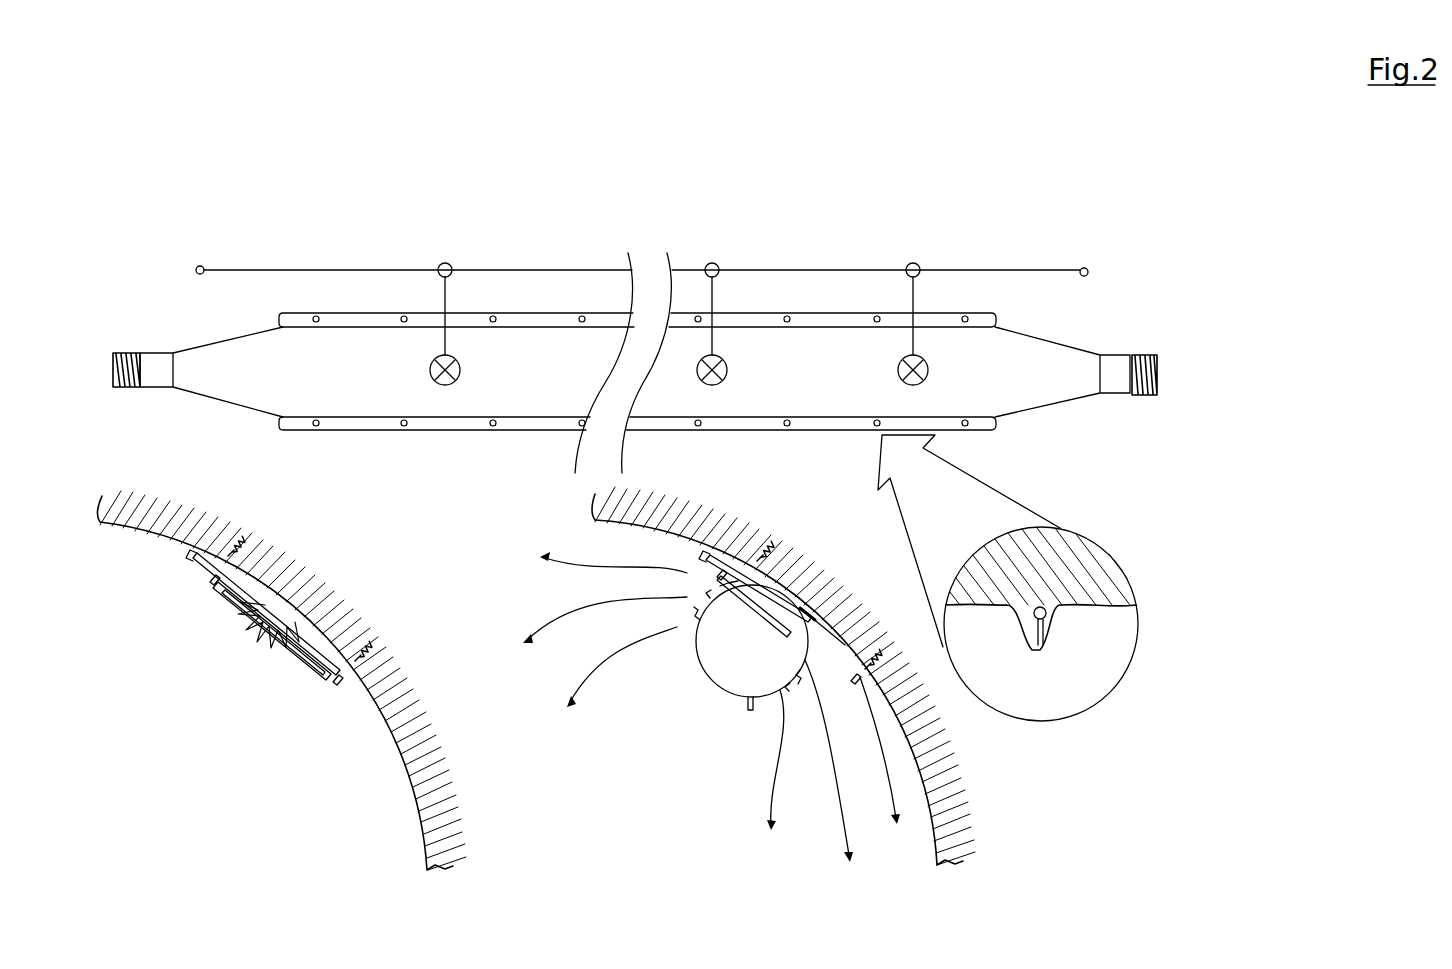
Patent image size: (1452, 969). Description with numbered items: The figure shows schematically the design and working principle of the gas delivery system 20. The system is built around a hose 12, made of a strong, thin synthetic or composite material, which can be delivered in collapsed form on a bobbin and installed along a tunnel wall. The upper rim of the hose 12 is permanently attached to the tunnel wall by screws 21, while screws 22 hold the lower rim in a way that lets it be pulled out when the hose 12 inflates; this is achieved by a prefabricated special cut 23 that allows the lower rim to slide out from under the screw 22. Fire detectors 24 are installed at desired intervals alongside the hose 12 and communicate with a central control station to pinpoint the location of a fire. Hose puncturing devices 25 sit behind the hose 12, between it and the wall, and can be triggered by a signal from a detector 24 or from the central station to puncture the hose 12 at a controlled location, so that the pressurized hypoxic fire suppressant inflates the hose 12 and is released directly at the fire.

The gas delivery system 20 is at (1140, 210).
The hose 12 is at (713, 680).
The screws 21 is at (404, 315).
The screws 22 is at (404, 432).
The special cut 23 is at (1045, 632).
The fire detectors 24 is at (452, 262).
The hose puncturing devices 25 is at (460, 370).